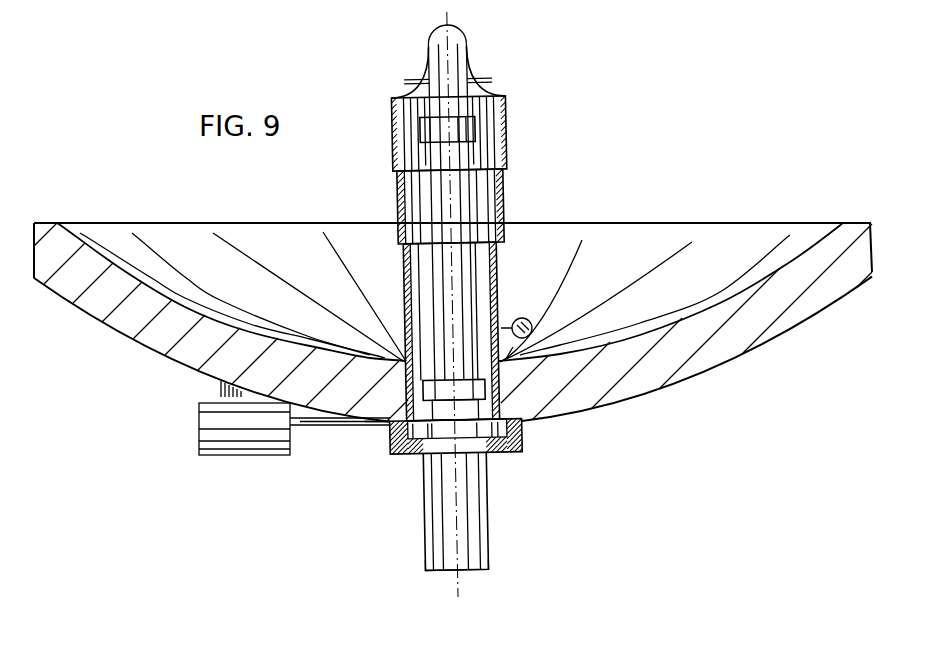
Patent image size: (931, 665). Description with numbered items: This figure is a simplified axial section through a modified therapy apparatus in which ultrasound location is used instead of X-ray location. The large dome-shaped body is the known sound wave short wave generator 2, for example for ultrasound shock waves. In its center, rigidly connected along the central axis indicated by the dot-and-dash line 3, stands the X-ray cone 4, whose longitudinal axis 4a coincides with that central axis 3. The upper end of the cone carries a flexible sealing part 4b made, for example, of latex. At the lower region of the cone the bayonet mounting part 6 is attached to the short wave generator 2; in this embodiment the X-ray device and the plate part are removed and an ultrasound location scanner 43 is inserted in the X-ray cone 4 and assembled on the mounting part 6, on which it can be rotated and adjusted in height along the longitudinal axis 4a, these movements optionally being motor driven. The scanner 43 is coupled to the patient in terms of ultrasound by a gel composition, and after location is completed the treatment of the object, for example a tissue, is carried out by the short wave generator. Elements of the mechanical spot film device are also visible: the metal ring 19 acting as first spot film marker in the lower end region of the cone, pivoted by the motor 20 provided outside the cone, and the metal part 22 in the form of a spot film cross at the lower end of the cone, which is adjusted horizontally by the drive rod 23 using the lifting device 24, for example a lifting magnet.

The short wave generator 2 is at (747, 325).
The X-ray cone 4 is at (507, 115).
The longitudinal axis 4a is at (458, 578).
The central axis 3 is at (495, 536).
The flexible sealing part 4b is at (473, 50).
The bayonet mounting part 6 is at (522, 437).
The metal ring 19 is at (537, 410).
The motor 20 is at (532, 328).
The metal part 22 is at (372, 427).
The drive rod 23 is at (308, 428).
The lifting device 24 is at (232, 437).
The ultrasound location scanner 43 is at (488, 497).